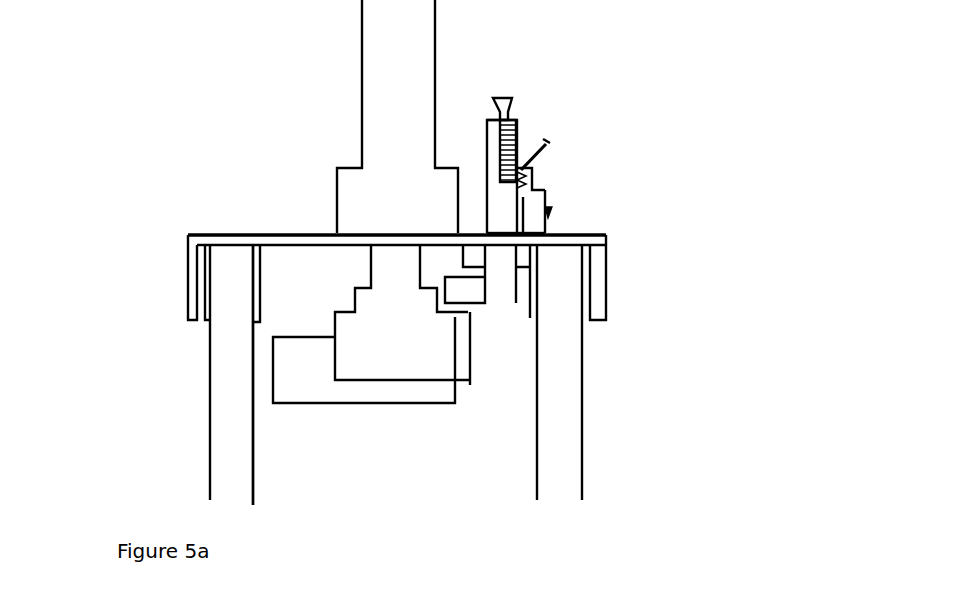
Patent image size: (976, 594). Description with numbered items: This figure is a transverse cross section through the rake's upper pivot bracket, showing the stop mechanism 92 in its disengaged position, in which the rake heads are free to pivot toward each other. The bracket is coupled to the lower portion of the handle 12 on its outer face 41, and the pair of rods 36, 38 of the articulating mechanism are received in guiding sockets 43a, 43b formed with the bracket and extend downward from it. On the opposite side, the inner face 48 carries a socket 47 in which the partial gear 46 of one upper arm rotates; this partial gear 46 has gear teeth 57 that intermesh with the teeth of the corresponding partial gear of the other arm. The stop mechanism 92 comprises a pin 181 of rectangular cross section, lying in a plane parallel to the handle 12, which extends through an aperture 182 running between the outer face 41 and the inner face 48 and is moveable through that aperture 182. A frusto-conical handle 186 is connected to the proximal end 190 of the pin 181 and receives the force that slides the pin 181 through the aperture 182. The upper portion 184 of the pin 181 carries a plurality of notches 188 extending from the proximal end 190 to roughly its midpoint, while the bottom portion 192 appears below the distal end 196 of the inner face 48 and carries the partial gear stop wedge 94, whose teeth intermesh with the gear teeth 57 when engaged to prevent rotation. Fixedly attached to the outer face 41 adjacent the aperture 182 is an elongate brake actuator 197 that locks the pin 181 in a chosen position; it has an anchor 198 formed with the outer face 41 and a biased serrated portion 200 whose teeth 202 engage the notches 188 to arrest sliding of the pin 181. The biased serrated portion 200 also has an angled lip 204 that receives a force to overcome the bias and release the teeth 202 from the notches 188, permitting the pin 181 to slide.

The handle 12 is at (386, 92).
The rod 36 is at (223, 478).
The rod 38 is at (563, 482).
The outer face 41 is at (228, 232).
The guiding socket 43a is at (200, 262).
The guiding socket 43b is at (600, 283).
The partial gear 46 is at (373, 340).
The socket 47 is at (372, 272).
The inner face 48 is at (312, 248).
The gear teeth 57 is at (468, 357).
The stop mechanism 92 is at (629, 144).
The partial gear stop wedge 94 is at (498, 306).
The pin 181 is at (500, 153).
The aperture 182 is at (476, 232).
The upper portion 184 is at (485, 230).
The frusto-conical handle 186 is at (503, 97).
The notches 188 is at (550, 141).
The proximal end 190 is at (519, 119).
The bottom portion 192 is at (552, 205).
The distal end 196 is at (468, 285).
The brake actuator 197 is at (528, 222).
The anchor 198 is at (530, 235).
The biased serrated portion 200 is at (533, 170).
The teeth 202 is at (548, 188).
The angled lip 204 is at (548, 158).